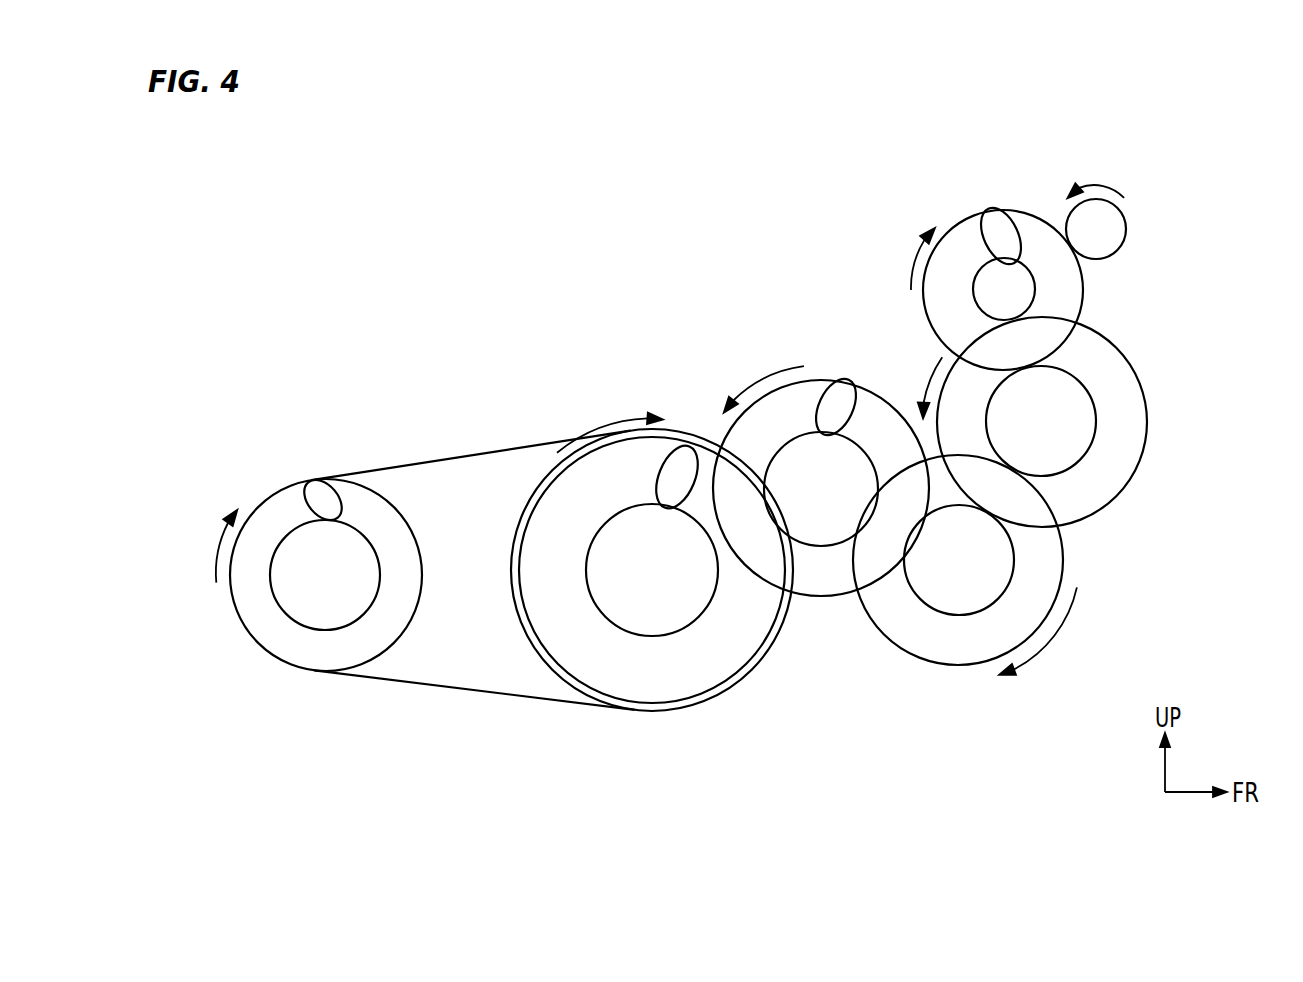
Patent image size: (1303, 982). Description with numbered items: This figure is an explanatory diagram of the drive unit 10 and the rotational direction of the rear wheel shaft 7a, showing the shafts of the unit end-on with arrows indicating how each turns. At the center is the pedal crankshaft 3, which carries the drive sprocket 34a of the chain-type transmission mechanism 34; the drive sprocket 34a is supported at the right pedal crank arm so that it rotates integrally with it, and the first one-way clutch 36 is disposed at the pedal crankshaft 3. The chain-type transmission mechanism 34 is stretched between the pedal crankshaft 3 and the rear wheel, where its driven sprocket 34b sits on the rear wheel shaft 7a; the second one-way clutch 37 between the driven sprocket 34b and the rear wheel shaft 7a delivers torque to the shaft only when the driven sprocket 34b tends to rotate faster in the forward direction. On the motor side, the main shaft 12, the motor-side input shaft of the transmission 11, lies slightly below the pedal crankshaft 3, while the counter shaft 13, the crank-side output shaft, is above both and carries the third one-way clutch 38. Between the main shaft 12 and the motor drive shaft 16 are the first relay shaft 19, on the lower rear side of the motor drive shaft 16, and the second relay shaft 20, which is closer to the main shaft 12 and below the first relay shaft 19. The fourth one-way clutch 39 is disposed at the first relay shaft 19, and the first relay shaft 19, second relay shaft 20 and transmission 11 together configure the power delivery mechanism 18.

The drive unit 10 is at (641, 218).
The pedal crankshaft 3 is at (598, 563).
The rear wheel shaft 7a is at (313, 612).
The transmission 11 is at (977, 680).
The main shaft 12 is at (1002, 563).
The counter shaft 13 is at (838, 457).
The motor drive shaft 16 is at (1118, 230).
The power delivery mechanism 18 is at (958, 192).
The first relay shaft 19 is at (1023, 292).
The second relay shaft 20 is at (1078, 427).
The chain-type transmission mechanism 34 is at (486, 692).
The drive sprocket 34a is at (518, 528).
The driven sprocket 34b is at (237, 617).
The first one-way clutch 36 is at (692, 455).
The second one-way clutch 37 is at (309, 502).
The third one-way clutch 38 is at (833, 395).
The fourth one-way clutch 39 is at (1005, 225).